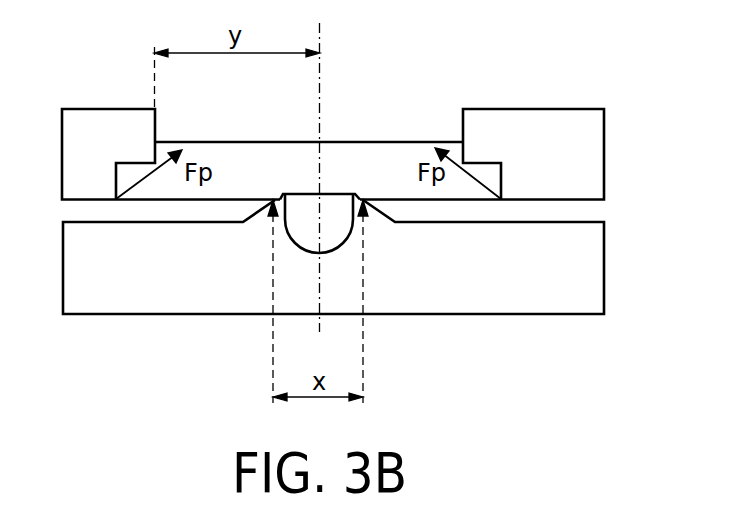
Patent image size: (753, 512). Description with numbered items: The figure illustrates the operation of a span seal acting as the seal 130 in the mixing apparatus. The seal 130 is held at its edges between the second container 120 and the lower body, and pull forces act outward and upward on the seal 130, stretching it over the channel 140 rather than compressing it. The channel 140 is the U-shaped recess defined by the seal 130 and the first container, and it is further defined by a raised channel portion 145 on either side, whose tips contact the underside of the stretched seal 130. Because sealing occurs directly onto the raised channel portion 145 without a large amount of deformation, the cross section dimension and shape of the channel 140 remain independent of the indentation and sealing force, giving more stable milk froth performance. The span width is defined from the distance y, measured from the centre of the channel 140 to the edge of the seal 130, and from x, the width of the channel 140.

The second container 120 is at (585, 170).
The seal 130 is at (402, 150).
The channel 140 is at (308, 212).
The raised channel portion 145 is at (258, 217).